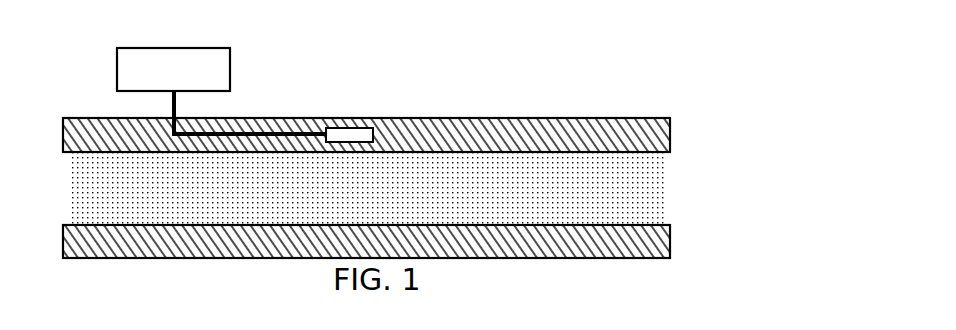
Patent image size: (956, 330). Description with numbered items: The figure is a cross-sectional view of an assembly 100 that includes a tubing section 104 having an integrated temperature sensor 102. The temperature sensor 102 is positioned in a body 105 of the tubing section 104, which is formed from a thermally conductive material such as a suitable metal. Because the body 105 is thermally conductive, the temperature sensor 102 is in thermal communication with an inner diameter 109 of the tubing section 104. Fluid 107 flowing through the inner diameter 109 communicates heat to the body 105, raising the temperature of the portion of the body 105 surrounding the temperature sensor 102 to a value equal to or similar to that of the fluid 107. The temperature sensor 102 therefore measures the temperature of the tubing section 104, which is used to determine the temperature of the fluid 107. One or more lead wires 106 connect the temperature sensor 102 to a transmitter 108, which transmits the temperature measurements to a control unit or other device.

The assembly 100 is at (567, 78).
The temperature sensor 102 is at (343, 125).
The tubing section 104 is at (68, 160).
The body 105 is at (464, 126).
The lead wires 106 is at (259, 130).
The fluid 107 is at (652, 202).
The transmitter 108 is at (173, 69).
The inner diameter 109 is at (662, 180).